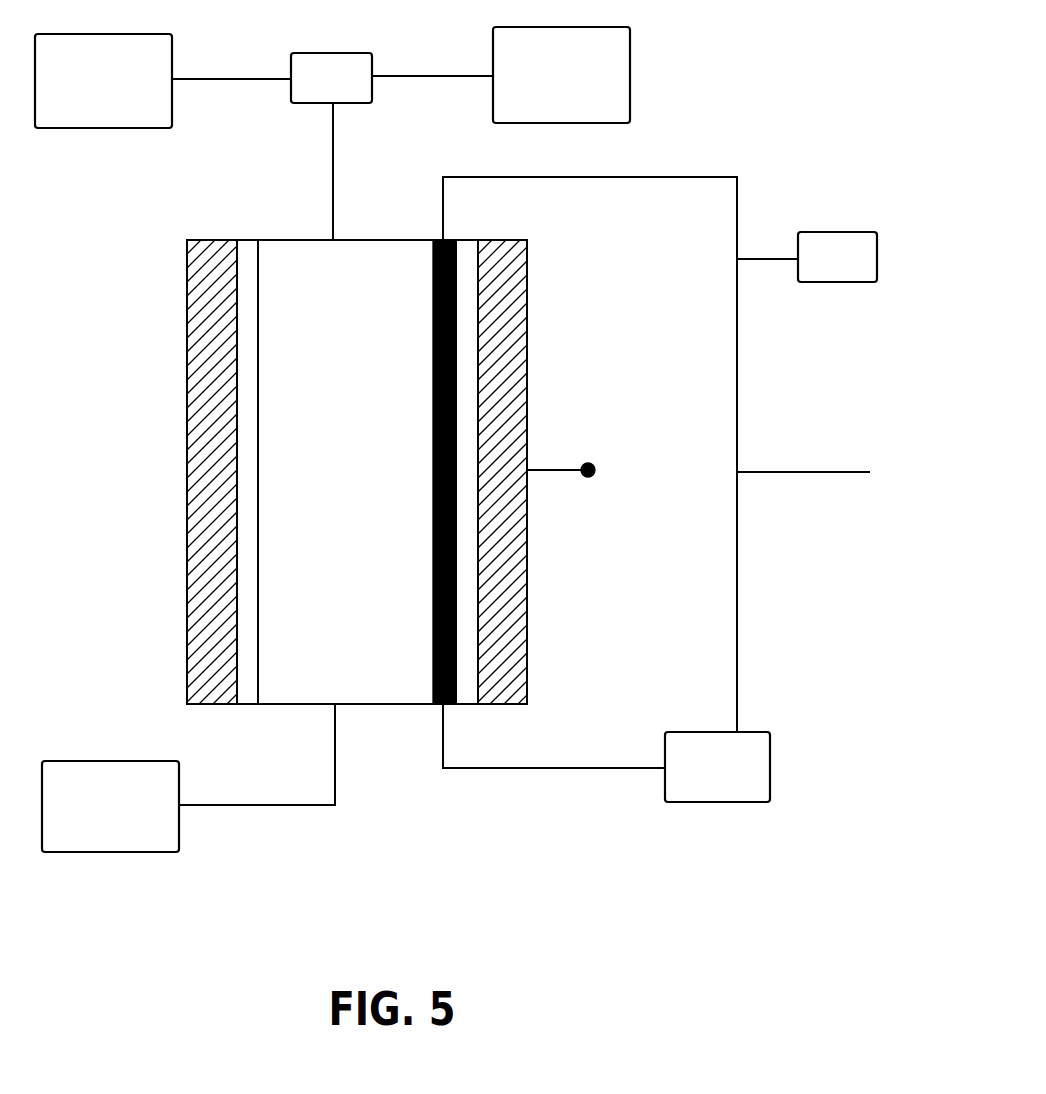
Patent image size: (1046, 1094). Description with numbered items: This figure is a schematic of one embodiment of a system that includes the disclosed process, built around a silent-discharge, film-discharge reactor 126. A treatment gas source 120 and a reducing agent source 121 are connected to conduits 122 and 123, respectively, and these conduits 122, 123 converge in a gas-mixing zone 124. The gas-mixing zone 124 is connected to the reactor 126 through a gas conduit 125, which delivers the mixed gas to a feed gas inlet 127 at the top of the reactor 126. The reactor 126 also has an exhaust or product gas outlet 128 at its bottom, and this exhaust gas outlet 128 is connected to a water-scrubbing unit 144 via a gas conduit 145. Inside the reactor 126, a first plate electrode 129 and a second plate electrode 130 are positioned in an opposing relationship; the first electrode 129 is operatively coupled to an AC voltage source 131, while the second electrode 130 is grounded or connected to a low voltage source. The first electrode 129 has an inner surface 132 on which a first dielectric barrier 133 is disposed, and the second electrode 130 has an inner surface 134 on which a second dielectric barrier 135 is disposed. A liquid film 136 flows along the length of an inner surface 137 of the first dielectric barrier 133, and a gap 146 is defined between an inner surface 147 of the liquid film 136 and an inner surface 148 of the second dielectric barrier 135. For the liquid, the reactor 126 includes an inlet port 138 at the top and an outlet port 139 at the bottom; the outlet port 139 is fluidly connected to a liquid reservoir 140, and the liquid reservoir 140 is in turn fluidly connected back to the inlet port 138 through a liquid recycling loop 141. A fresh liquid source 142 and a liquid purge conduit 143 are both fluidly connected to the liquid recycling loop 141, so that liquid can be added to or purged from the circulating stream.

The treatment gas source 120 is at (103, 81).
The reducing agent source 121 is at (561, 75).
The conduit 122 is at (231, 65).
The conduit 123 is at (432, 63).
The gas-mixing zone 124 is at (331, 78).
The gas conduit 125 is at (353, 171).
The silent-discharge, film-discharge reactor 126 is at (160, 488).
The feed gas inlet 127 is at (333, 240).
The exhaust gas outlet 128 is at (335, 708).
The first plate electrode 129 is at (498, 437).
The second plate electrode 130 is at (200, 630).
The AC voltage source 131 is at (592, 462).
The inner surface 132 is at (483, 293).
The first dielectric barrier 133 is at (470, 657).
The inner surface 134 is at (235, 285).
The second dielectric barrier 135 is at (250, 535).
The liquid film 136 is at (458, 572).
The inner surface 137 is at (442, 383).
The inlet port 138 is at (443, 238).
The outlet port 139 is at (452, 706).
The liquid reservoir 140 is at (717, 767).
The liquid recycling loop 141 is at (750, 593).
The fresh liquid source 142 is at (807, 257).
The liquid purge conduit 143 is at (803, 459).
The water-scrubbing unit 144 is at (110, 806).
The gas conduit 145 is at (257, 773).
The gap 146 is at (357, 471).
The inner surface 147 is at (433, 298).
The inner surface 148 is at (260, 280).